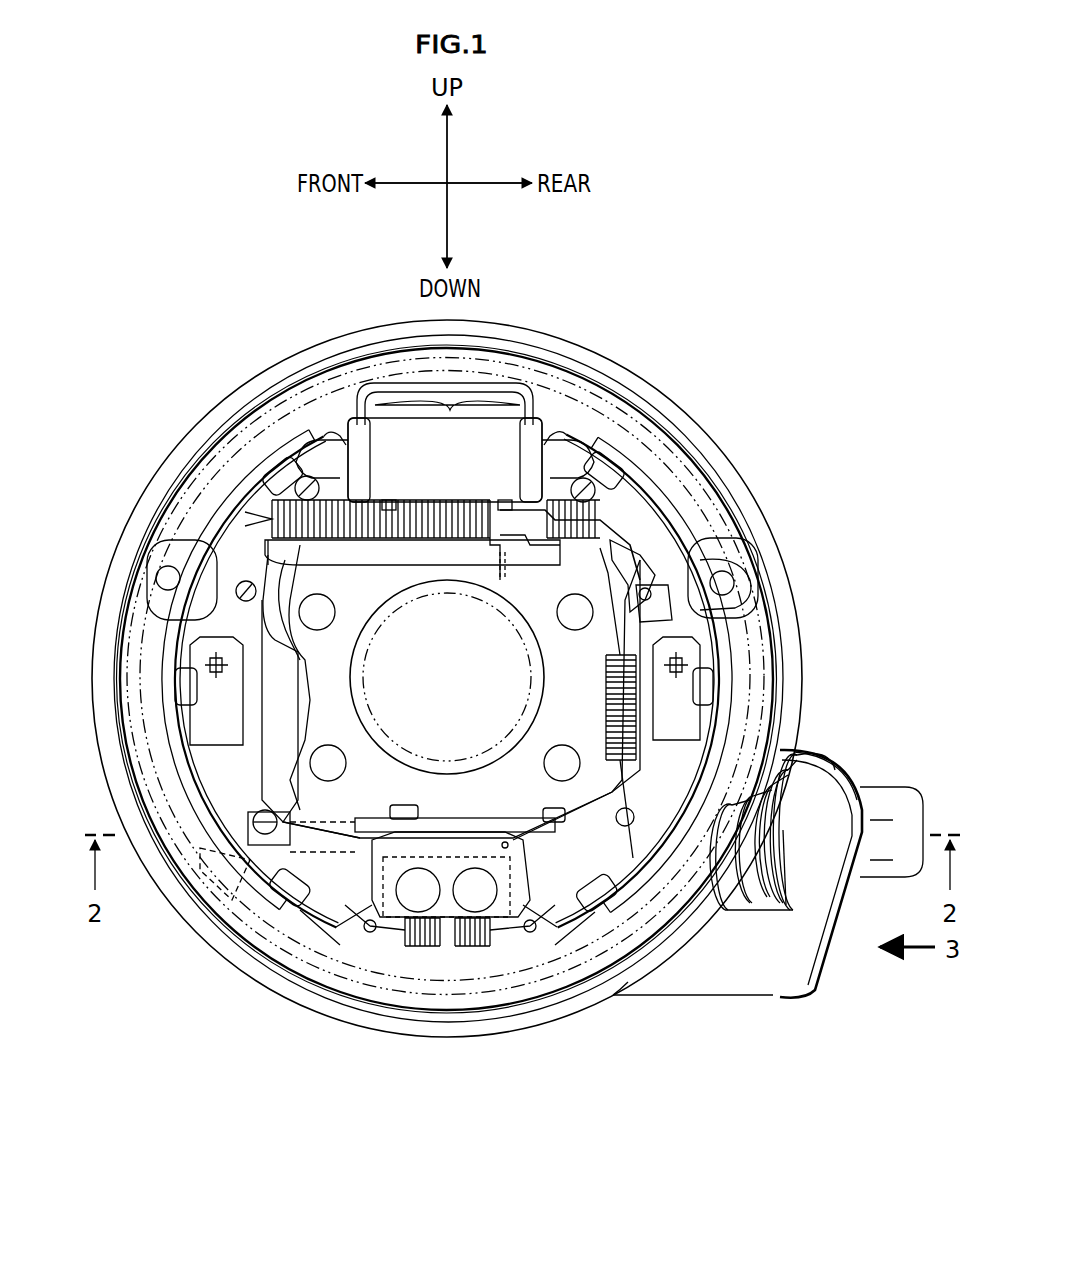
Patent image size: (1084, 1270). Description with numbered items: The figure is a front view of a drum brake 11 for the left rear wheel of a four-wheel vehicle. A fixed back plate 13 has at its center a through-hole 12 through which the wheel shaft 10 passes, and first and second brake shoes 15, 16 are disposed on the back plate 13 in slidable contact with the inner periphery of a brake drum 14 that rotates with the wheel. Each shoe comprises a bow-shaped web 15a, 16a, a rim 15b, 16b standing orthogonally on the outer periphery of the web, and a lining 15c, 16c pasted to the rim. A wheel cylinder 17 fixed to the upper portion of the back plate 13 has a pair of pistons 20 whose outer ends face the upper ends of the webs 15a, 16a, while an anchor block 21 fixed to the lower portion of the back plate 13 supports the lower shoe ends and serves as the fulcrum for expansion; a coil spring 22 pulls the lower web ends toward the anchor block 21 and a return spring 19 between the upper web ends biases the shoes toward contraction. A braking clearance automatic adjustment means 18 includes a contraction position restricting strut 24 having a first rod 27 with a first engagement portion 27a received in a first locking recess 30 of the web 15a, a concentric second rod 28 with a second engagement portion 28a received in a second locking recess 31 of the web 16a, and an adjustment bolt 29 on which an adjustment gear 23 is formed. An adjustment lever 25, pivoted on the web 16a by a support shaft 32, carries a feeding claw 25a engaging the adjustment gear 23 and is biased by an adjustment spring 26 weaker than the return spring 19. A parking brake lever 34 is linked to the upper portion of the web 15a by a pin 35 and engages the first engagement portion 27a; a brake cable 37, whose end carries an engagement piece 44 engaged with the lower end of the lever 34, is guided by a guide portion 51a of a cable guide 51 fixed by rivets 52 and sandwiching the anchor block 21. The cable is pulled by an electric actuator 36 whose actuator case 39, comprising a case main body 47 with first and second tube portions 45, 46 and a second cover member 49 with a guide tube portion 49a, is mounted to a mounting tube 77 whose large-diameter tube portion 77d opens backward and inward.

The wheel shaft 10 is at (530, 690).
The drum brake 11 is at (368, 1034).
The through-hole 12 is at (395, 760).
The back plate 13 is at (792, 698).
The brake drum 14 is at (648, 405).
The first brake shoe 15 is at (212, 646).
The web of first brake shoe 15a is at (208, 568).
The rim of first brake shoe 15b is at (172, 620).
The lining of first brake shoe 15c is at (168, 660).
The second brake shoe 16 is at (696, 683).
The web of second brake shoe 16a is at (700, 618).
The rim of second brake shoe 16b is at (680, 535).
The lining of second brake shoe 16c is at (665, 508).
The wheel cylinder 17 is at (488, 425).
The braking clearance automatic adjustment means 18 is at (760, 588).
The return spring 19 is at (410, 500).
The pistons 20 is at (318, 430).
The anchor block 21 is at (510, 885).
The coil spring 22 is at (465, 905).
The adjustment gear 23 is at (483, 560).
The contraction position restricting strut 24 is at (398, 574).
The adjustment lever 25 is at (580, 548).
The feeding claw 25a is at (508, 553).
The adjustment spring 26 is at (610, 702).
The first rod 27 is at (412, 627).
The first engagement portion 27a is at (300, 600).
The second rod 28 is at (624, 496).
The second engagement portion 28a is at (620, 555).
The adjustment bolt 29 is at (490, 585).
The first locking recess 30 is at (237, 596).
The second locking recess 31 is at (690, 578).
The support shaft 32 is at (690, 608).
The parking brake lever 34 is at (265, 735).
The pin 35 is at (300, 477).
The electric actuator 36 is at (738, 1010).
The brake cable 37 is at (505, 835).
The actuator case 39 is at (818, 1000).
The engagement piece 44 is at (232, 928).
The first tube portion 45 is at (718, 985).
The second tube portion 46 is at (850, 760).
The case main body 47 is at (820, 960).
The second cover member 49 is at (871, 831).
The guide tube portion 49a is at (897, 800).
The cable guide 51 is at (406, 876).
The guide portion 51a is at (420, 825).
The rivets 52 is at (460, 905).
The mounting tube 77 is at (806, 859).
The large-diameter tube portion 77d is at (785, 835).